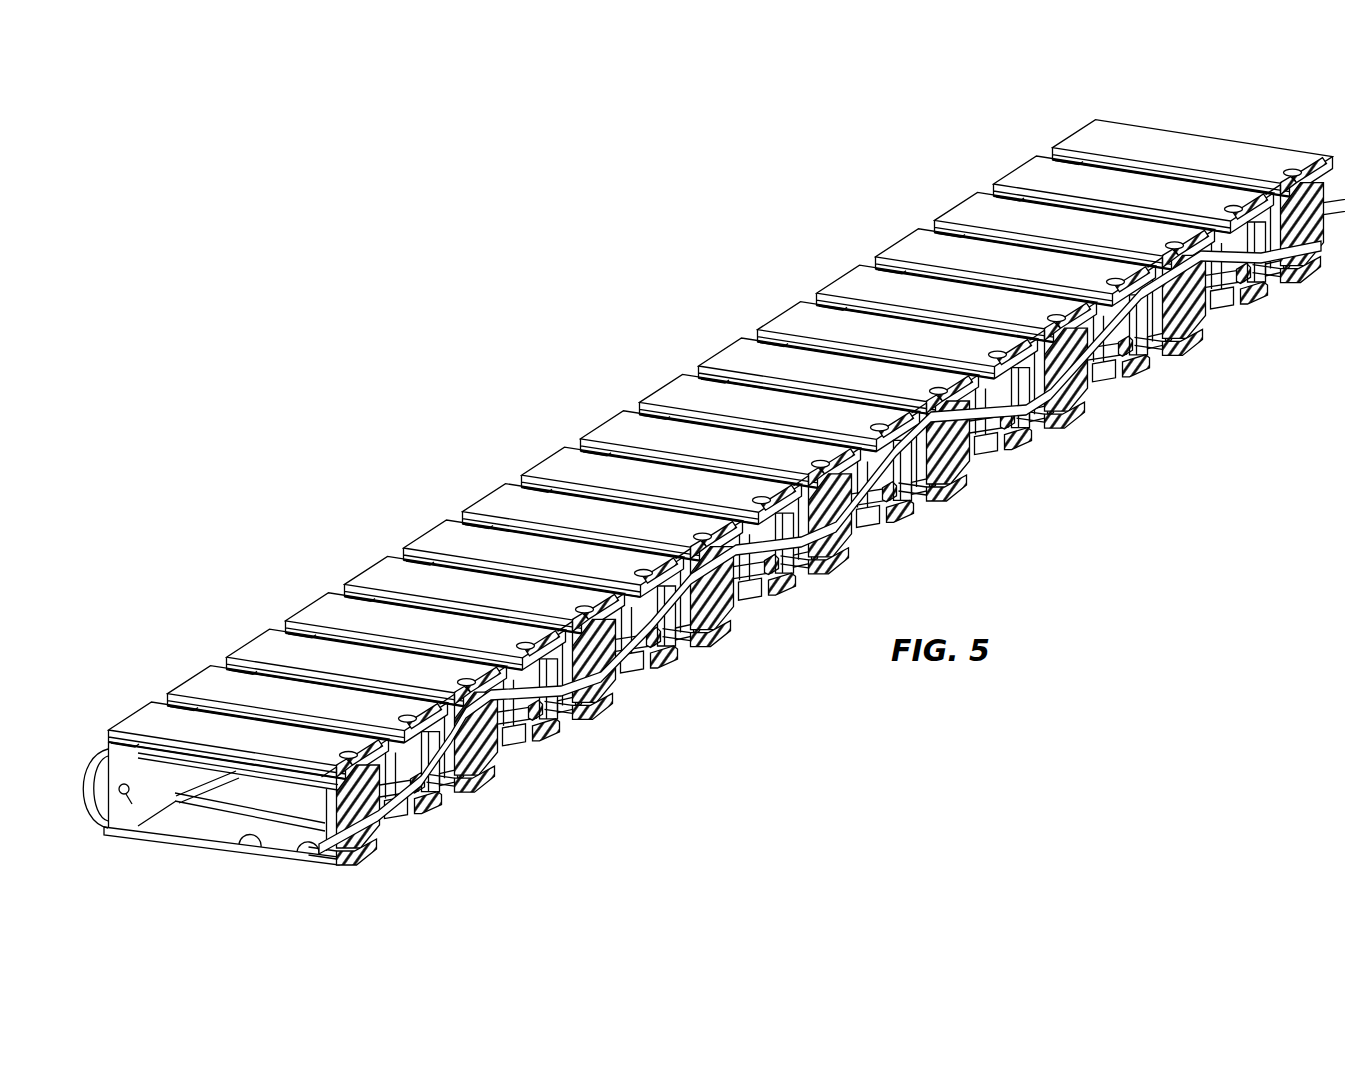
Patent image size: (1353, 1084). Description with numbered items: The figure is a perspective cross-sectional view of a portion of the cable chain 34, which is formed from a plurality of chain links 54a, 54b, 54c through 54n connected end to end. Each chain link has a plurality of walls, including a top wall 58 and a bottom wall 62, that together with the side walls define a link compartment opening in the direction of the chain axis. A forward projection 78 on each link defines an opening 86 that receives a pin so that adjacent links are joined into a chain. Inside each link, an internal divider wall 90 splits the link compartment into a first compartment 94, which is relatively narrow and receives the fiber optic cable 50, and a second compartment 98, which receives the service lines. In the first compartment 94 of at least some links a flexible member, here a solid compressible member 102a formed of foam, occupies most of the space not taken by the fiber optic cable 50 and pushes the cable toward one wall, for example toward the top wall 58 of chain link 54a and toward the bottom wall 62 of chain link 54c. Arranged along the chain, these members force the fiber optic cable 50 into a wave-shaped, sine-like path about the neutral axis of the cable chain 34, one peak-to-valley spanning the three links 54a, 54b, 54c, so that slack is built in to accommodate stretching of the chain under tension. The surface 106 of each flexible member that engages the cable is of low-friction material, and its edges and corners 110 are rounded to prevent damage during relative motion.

The cable chain 34 is at (703, 497).
The fiber optic cable 50 is at (636, 632).
The chain link 54a is at (259, 771).
The chain link 54b is at (220, 682).
The chain link 54c is at (600, 661).
The chain link 54n is at (1096, 128).
The top wall 58 is at (330, 648).
The bottom wall 62 is at (170, 842).
The forward projection 78 is at (86, 768).
The opening 86 is at (128, 797).
The internal divider wall 90 is at (305, 848).
The first compartment 94 is at (350, 858).
The second compartment 98 is at (245, 836).
The compressible member 102a is at (370, 795).
The surface 106 is at (725, 630).
The edges/corners 110 is at (952, 490).